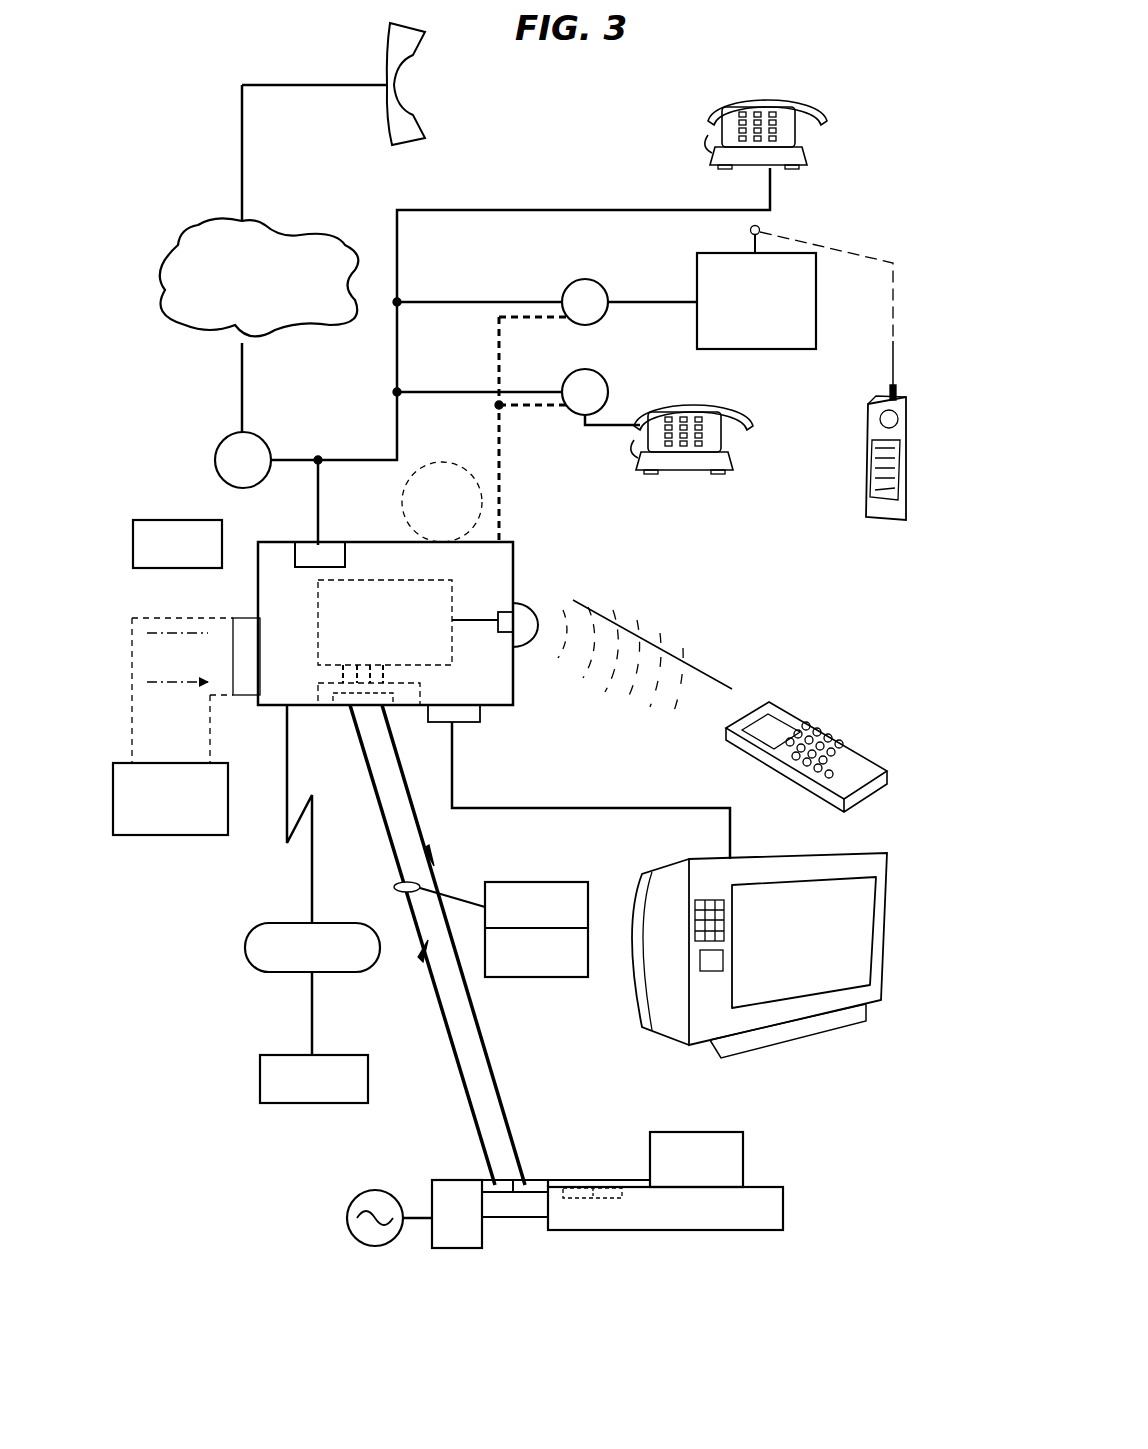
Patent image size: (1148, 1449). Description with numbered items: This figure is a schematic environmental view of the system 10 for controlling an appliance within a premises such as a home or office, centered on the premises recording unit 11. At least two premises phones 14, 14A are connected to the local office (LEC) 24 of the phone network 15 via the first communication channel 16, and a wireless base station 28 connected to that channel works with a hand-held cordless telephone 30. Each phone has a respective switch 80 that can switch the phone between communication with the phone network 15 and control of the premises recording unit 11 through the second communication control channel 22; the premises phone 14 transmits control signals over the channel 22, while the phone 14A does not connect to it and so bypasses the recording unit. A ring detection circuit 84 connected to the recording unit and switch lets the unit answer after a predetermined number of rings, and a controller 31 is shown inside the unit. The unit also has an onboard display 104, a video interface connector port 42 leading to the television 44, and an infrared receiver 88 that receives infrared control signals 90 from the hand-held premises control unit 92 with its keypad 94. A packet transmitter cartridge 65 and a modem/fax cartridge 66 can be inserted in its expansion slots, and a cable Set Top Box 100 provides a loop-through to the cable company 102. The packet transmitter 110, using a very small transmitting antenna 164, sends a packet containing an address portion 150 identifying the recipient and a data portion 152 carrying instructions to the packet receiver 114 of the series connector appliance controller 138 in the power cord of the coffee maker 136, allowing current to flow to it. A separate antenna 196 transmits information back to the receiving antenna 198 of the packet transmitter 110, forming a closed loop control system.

The system 10 is at (470, 150).
The premises recording unit 11 is at (522, 752).
The premises phone 14 is at (685, 479).
The premises phone 14A is at (768, 170).
The phone network 15 is at (162, 248).
The first communication channel 16 is at (523, 208).
The second communication control channel 22 is at (497, 360).
The local office (LEC) 24 is at (227, 435).
The wireless base station 28 is at (771, 349).
The hand-held cordless telephone 30 is at (870, 512).
The controller 31 is at (402, 583).
The video interface connector port 42 is at (475, 724).
The television display 44 is at (881, 935).
The packet transmitter cartridge 65 is at (160, 838).
The modem/fax cartridge 66 is at (147, 520).
The switch 80 is at (562, 290).
The ring detection circuit 84 is at (310, 565).
The infrared receiver 88 is at (532, 614).
The infrared control signals 90 is at (658, 645).
The premises control unit 92 is at (795, 718).
The keypad 94 is at (838, 740).
The cable Set Top Box 100 is at (245, 957).
The cable company 102 is at (260, 1079).
The onboard display 104 is at (458, 470).
The packet transmitter 110 is at (327, 712).
The packet receiver 114 is at (487, 1179).
The coffee maker 136 is at (770, 1200).
The series connector appliance controller 138 is at (457, 1252).
The address portion 150 is at (527, 880).
The data portion 152 is at (530, 978).
The transmitting antenna 164 is at (347, 709).
The separate antenna 196 is at (540, 1181).
The receiving antenna 198 is at (387, 710).